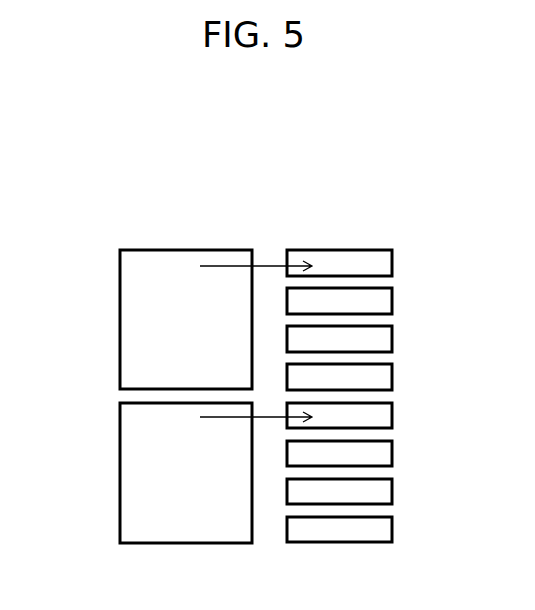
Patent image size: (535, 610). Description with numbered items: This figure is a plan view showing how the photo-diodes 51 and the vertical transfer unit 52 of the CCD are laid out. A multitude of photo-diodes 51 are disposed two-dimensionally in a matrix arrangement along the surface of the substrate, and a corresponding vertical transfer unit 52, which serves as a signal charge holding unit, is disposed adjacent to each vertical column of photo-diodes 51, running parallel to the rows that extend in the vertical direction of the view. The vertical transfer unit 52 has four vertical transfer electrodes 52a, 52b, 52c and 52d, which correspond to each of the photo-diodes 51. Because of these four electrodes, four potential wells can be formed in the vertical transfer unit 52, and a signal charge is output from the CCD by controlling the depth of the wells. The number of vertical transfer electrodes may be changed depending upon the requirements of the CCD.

The photo-diode 51 is at (155, 354).
The vertical transfer unit 52 is at (348, 243).
The vertical transfer electrode 52a is at (377, 265).
The vertical transfer electrode 52b is at (377, 303).
The vertical transfer electrode 52c is at (377, 341).
The vertical transfer electrode 52d is at (377, 379).